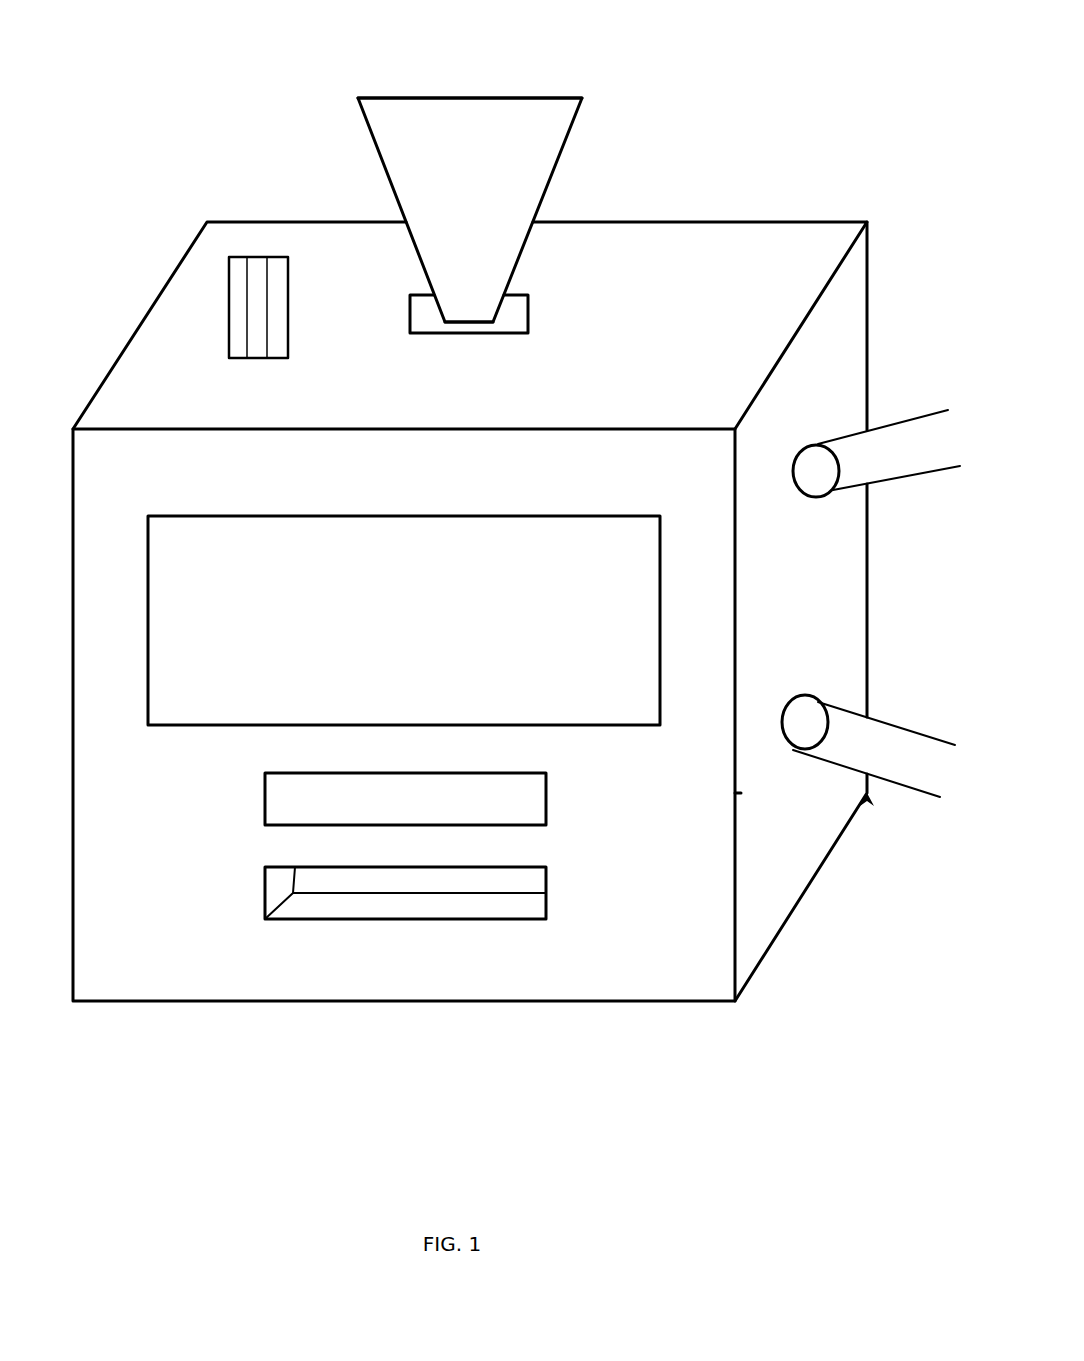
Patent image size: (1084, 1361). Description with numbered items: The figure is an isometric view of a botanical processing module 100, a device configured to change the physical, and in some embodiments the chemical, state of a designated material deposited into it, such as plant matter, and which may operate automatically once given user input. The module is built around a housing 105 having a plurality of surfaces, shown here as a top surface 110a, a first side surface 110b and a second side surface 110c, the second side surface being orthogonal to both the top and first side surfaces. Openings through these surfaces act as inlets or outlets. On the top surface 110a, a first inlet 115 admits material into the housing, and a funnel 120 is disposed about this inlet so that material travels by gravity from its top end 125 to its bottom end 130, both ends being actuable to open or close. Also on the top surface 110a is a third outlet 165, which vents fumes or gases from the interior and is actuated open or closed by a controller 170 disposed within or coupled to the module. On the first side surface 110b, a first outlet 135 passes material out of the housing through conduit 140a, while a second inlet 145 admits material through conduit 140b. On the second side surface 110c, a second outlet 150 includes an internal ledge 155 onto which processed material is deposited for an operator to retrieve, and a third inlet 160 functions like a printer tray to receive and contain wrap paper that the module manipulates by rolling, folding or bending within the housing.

The botanical processing module 100 is at (288, 1063).
The housing 105 is at (506, 638).
The top surface 110a is at (738, 253).
The first side surface 110b is at (839, 395).
The second side surface 110c is at (163, 932).
The first inlet 115 is at (515, 313).
The funnel 120 is at (435, 178).
The top end 125 is at (483, 97).
The bottom end 130 is at (470, 319).
The first outlet 135 is at (807, 715).
The conduit 140a is at (900, 738).
The conduit 140b is at (905, 448).
The second inlet 145 is at (807, 462).
The second outlet 150 is at (469, 879).
The internal ledge 155 is at (347, 907).
The third inlet 160 is at (547, 812).
The third outlet 165 is at (255, 285).
The controller 170 is at (404, 620).